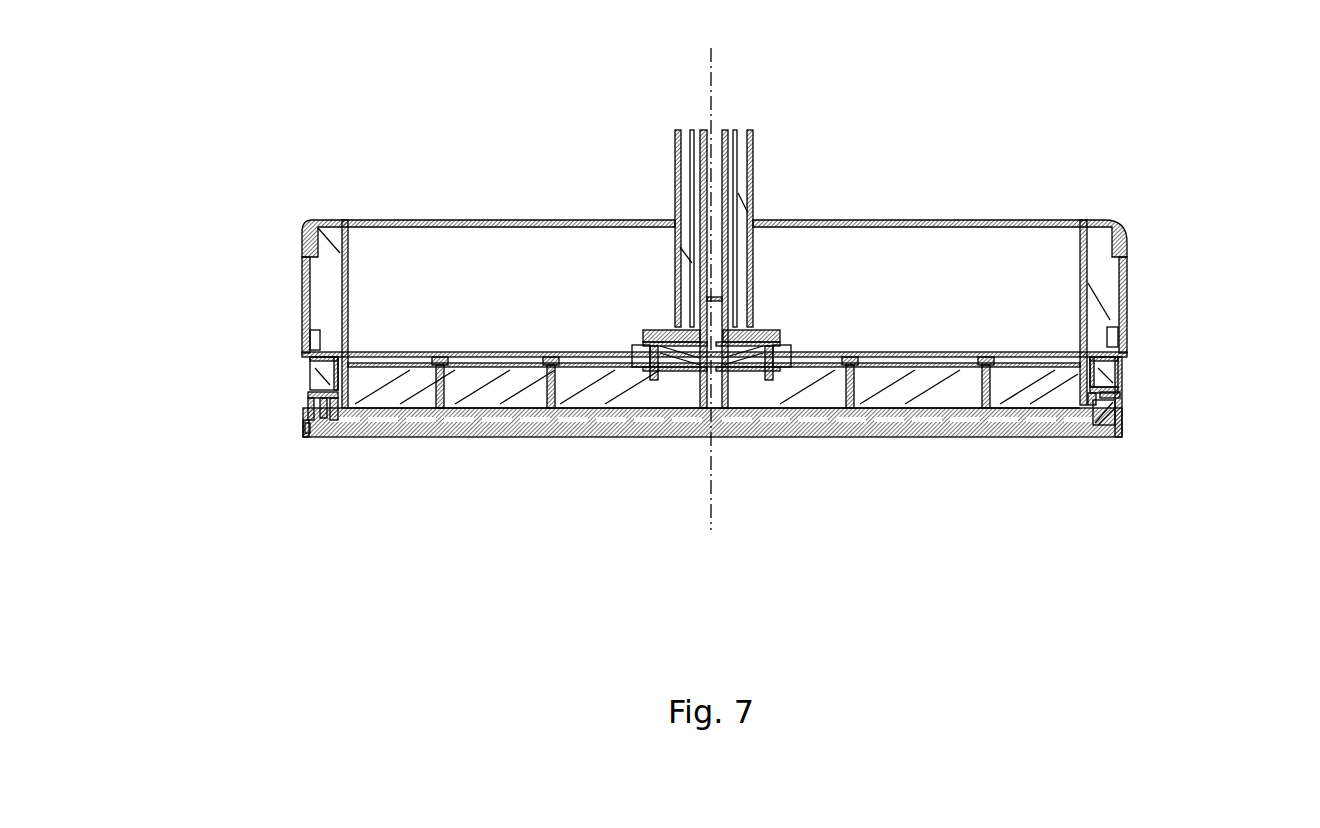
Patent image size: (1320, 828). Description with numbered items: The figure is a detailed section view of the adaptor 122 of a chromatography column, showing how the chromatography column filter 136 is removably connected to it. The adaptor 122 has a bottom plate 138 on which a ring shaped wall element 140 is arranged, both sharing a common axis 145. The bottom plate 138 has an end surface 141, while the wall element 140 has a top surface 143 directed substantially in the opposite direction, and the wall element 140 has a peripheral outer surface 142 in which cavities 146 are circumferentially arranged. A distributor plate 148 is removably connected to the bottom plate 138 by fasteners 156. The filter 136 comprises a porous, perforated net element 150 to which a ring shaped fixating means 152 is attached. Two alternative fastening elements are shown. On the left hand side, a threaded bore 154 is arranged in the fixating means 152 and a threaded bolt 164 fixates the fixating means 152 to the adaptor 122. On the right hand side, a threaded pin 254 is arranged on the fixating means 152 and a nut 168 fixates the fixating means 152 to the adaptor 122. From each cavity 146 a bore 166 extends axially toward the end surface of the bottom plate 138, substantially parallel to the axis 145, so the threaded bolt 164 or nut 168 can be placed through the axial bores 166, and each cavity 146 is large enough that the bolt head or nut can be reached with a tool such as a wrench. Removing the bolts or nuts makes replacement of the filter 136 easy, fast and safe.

The adaptor 122 is at (786, 255).
The chromatography column filter 136 is at (473, 438).
The bottom plate 138 is at (913, 375).
The ring shaped wall element 140 is at (1088, 233).
The end surface 141 is at (893, 437).
The peripheral outer surface 142 is at (1128, 300).
The top surface 143 is at (1100, 222).
The axis 145 is at (712, 467).
The cavity 146 is at (305, 358).
The distributor plate 148 is at (585, 437).
The net element 150 is at (813, 437).
The fixating means 152 is at (297, 403).
The threaded bore 154 is at (303, 412).
The fastener 156 is at (440, 362).
The threaded bolt 164 is at (303, 376).
The bore 166 is at (300, 396).
The nut 168 is at (1122, 374).
The threaded pin 254 is at (1120, 392).